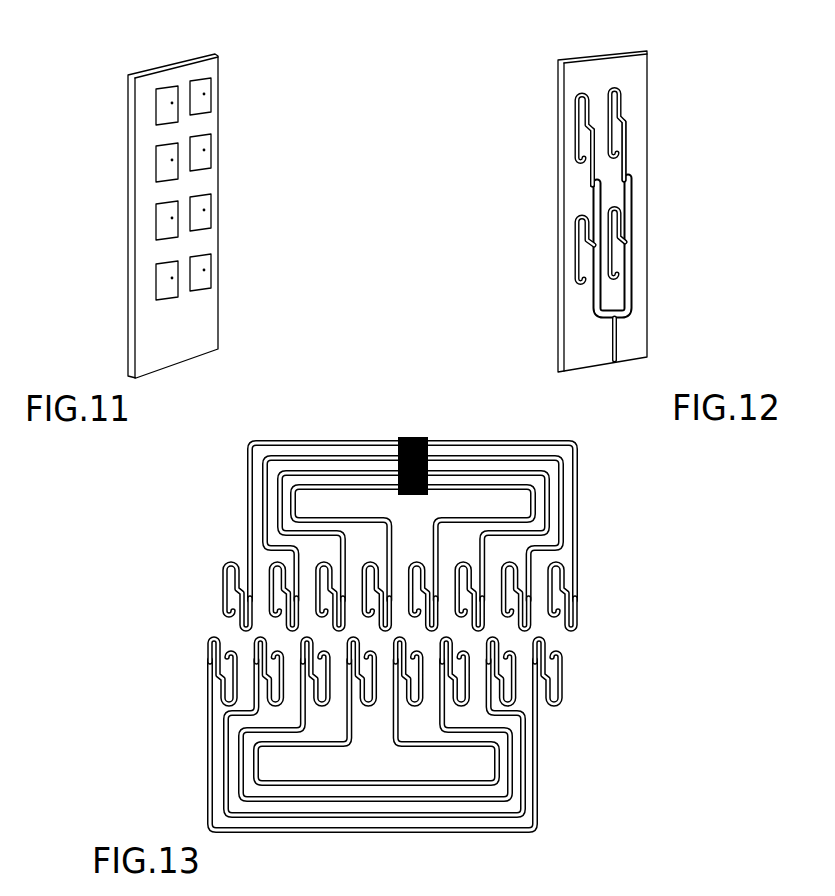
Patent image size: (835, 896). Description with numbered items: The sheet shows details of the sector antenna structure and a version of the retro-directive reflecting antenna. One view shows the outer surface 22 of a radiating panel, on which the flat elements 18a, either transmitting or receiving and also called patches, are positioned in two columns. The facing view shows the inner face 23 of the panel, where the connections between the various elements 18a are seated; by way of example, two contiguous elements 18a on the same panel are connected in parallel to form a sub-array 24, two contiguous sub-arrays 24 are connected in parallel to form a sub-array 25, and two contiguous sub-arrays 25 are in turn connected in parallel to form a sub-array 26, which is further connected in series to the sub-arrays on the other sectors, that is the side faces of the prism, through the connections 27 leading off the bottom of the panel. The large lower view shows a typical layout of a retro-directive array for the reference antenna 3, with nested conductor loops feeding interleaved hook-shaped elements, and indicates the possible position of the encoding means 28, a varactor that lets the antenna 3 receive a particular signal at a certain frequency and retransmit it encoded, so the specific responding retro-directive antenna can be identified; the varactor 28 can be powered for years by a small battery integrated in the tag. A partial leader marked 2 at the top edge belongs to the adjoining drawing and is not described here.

In FIG. 11, the sensor device 2 is at (373, 1).
In FIG. 13, the reference antenna 3 is at (404, 833).
In FIG. 11, the flat element 18a is at (163, 289).
In FIG. 11, the outer surface 22 is at (150, 72).
In FIG. 12, the inner face 23 is at (617, 62).
In FIG. 12, the sub-array 24 is at (621, 104).
In FIG. 12, the sub-array 25 is at (627, 163).
In FIG. 12, the sub-array 26 is at (635, 268).
In FIG. 12, the connections 27 is at (615, 342).
In FIG. 13, the encoding means (varactor) 28 is at (416, 437).